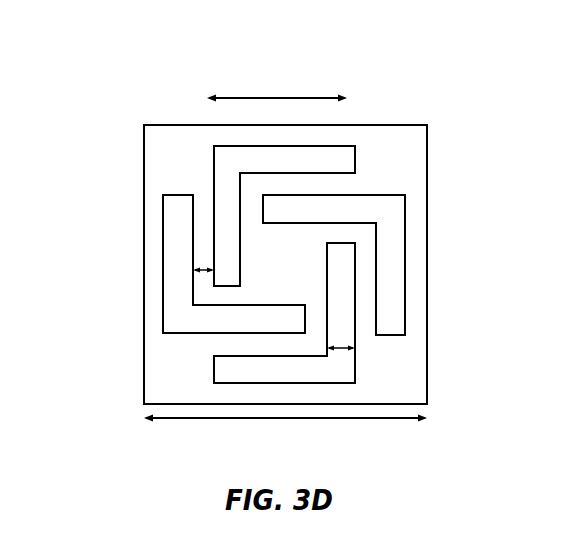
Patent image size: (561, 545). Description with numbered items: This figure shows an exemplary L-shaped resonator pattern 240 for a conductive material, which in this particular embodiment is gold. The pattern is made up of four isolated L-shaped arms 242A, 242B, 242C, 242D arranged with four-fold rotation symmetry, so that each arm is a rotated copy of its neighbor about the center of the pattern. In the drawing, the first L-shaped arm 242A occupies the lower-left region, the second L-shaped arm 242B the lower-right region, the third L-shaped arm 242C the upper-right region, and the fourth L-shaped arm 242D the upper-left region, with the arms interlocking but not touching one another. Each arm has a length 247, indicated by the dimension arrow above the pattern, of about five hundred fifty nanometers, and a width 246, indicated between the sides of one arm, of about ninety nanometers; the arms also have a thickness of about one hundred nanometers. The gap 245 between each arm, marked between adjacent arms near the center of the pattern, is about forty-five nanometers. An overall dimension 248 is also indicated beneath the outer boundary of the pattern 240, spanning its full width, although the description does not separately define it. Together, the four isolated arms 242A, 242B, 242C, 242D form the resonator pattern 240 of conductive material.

The L-shaped resonator pattern 240 is at (98, 70).
The L-shaped arm 242A is at (163, 288).
The L-shaped arm 242B is at (214, 368).
The L-shaped arm 242C is at (405, 215).
The L-shaped arm 242D is at (355, 161).
The gap 245 is at (197, 270).
The width 246 is at (345, 350).
The length 247 is at (285, 98).
The overall structure width 248 is at (285, 418).